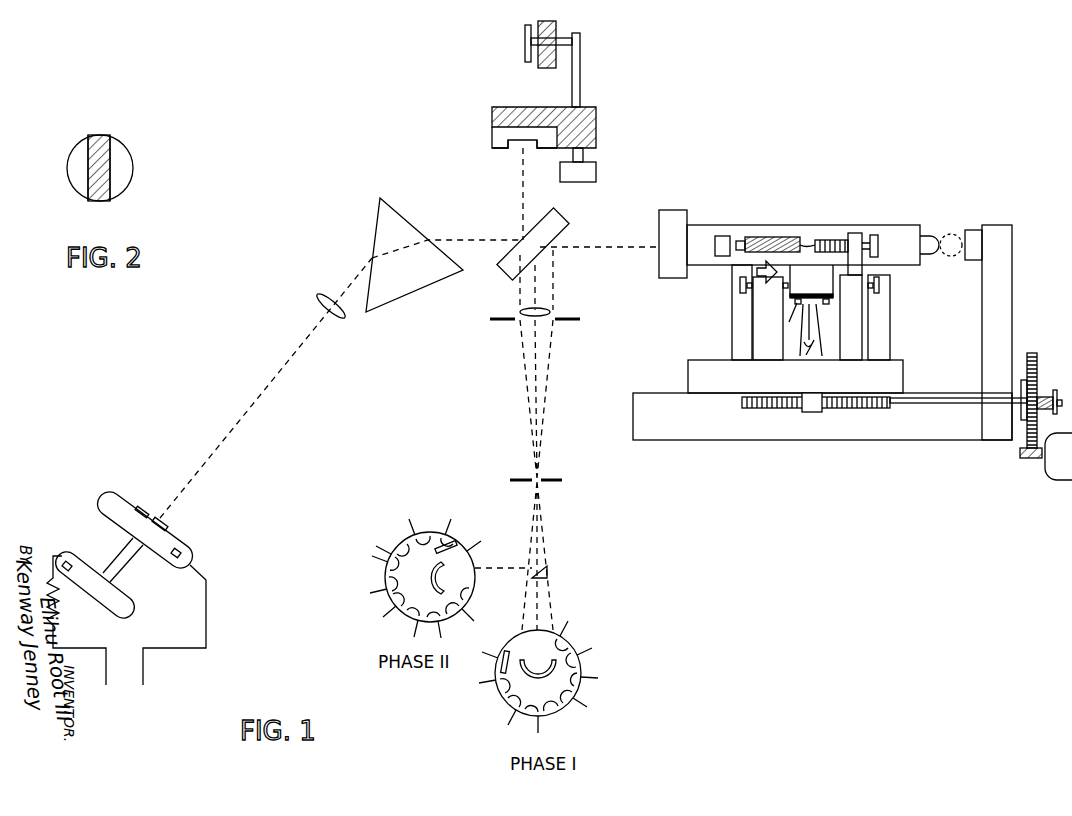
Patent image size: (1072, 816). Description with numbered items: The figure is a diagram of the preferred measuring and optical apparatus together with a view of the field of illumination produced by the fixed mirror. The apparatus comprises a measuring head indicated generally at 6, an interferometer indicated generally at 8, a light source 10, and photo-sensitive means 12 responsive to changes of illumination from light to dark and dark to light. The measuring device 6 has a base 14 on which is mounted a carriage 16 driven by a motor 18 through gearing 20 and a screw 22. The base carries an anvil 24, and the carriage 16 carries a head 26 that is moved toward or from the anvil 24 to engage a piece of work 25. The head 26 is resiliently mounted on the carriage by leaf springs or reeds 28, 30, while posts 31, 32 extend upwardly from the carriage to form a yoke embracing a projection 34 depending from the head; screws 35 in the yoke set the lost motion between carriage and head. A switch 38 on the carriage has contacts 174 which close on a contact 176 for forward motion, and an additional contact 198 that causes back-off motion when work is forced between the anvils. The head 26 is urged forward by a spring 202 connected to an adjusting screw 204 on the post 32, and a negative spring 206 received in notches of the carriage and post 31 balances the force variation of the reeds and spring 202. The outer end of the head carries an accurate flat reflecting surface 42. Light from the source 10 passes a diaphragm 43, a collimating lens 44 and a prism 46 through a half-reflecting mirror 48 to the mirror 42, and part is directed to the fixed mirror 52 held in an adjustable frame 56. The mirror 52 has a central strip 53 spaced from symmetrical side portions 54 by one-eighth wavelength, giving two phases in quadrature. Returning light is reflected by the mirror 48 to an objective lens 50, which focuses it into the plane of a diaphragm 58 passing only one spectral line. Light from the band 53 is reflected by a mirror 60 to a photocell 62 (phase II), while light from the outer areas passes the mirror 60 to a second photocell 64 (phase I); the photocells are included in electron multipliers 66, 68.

In FIG. 1, the measuring head 6 is at (880, 214).
In FIG. 1, the interferometer 8 is at (600, 172).
In FIG. 1, the light source 10 is at (70, 517).
In FIG. 1, the photo-sensitive means 12 is at (477, 690).
In FIG. 1, the base 14 is at (708, 442).
In FIG. 1, the carriage 16 is at (688, 368).
In FIG. 1, the motor 18 is at (1046, 470).
In FIG. 1, the gearing 20 is at (1037, 375).
In FIG. 1, the screw 22 is at (790, 409).
In FIG. 1, the anvil 24 is at (973, 230).
In FIG. 1, the piece of work 25 is at (952, 233).
In FIG. 1, the head 26 is at (699, 230).
In FIG. 1, the leaf spring (reed) 28 is at (890, 330).
In FIG. 1, the leaf spring (reed) 30 is at (732, 312).
In FIG. 1, the post 31 is at (770, 348).
In FIG. 1, the post 32 is at (858, 352).
In FIG. 1, the projection 34 is at (803, 291).
In FIG. 1, the screws 35 is at (740, 285).
In FIG. 1, the switch 38 is at (831, 348).
In FIG. 1, the reflecting surface (mirror) 42 is at (658, 266).
In FIG. 1, the diaphragm 43 is at (170, 525).
In FIG. 1, the collimating lens 44 is at (337, 318).
In FIG. 1, the prism 46 is at (401, 298).
In FIG. 1, the half-reflecting mirror 48 is at (572, 226).
In FIG. 1, the objective lens 50 is at (550, 311).
In FIG. 1, the fixed mirror 52 is at (488, 138).
In FIG. 2, the central strip (band) 53 is at (110, 197).
In FIG. 1, the central strip (band) 53 is at (533, 150).
In FIG. 2, the side portions 54 is at (118, 150).
In FIG. 1, the side portions 54 is at (503, 150).
In FIG. 1, the frame 56 is at (596, 118).
In FIG. 1, the diaphragm 58 is at (525, 478).
In FIG. 1, the mirror 60 is at (549, 572).
In FIG. 1, the photocell 62 is at (459, 540).
In FIG. 1, the photocell 64 is at (505, 648).
In FIG. 1, the electron multiplier 66 is at (388, 559).
In FIG. 1, the electron multiplier 68 is at (577, 700).
In FIG. 1, the contacts 174 is at (806, 346).
In FIG. 1, the contact 176 is at (775, 319).
In FIG. 1, the contact 198 is at (829, 303).
In FIG. 1, the spring 202 is at (762, 237).
In FIG. 1, the adjusting screw 204 is at (830, 236).
In FIG. 1, the negative spring 206 is at (757, 272).